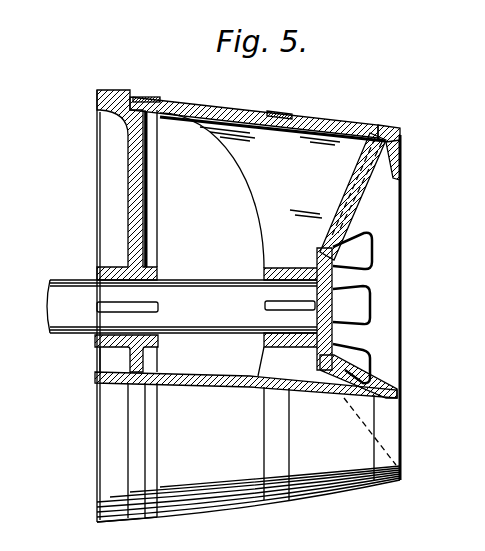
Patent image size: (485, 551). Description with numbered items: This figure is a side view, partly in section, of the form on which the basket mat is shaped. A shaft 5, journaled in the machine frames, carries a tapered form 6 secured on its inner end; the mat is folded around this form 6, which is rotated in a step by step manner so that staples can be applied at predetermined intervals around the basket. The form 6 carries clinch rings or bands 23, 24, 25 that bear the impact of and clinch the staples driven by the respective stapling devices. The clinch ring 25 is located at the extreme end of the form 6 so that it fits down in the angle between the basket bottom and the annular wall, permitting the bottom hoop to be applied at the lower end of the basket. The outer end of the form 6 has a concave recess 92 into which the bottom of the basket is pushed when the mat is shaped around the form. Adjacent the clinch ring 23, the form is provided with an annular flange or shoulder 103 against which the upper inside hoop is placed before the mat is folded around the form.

The annular flange or shoulder 103 is at (143, 65).
The clinch ring 23 is at (146, 100).
The clinch ring 24 is at (285, 102).
The tapered form 6 is at (354, 127).
The clinch ring 25 is at (385, 132).
The concave recess 92 is at (335, 278).
The shaft 5 is at (50, 333).